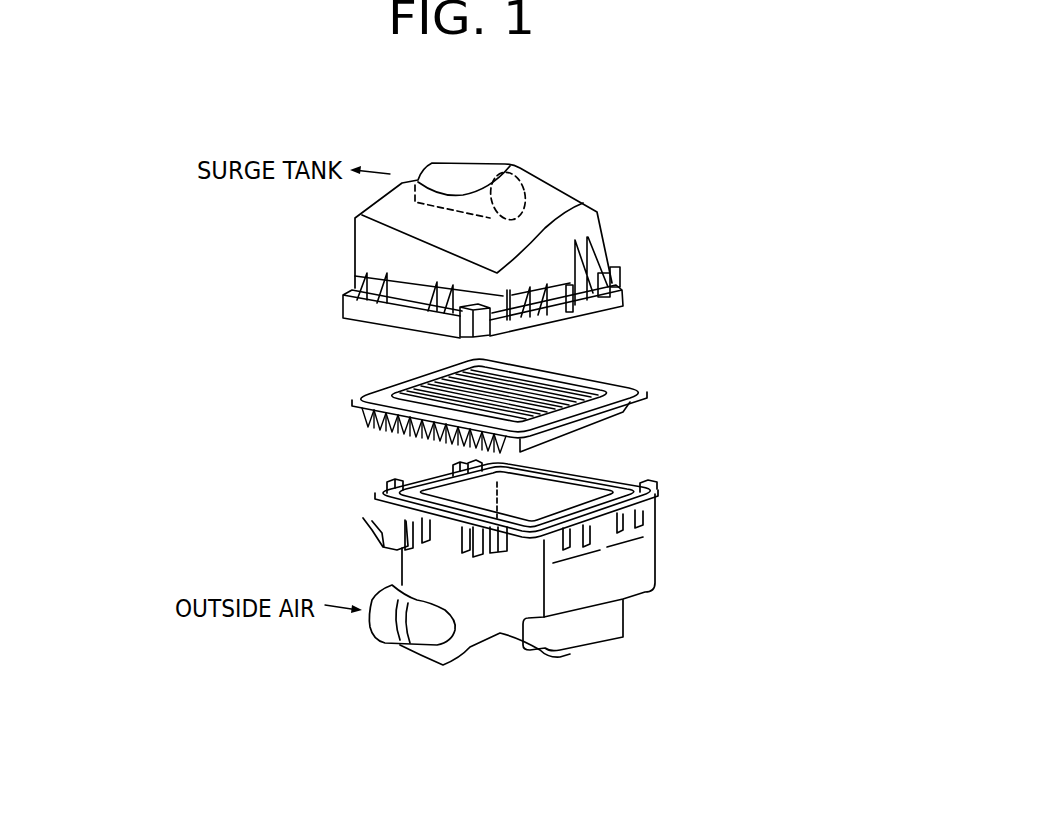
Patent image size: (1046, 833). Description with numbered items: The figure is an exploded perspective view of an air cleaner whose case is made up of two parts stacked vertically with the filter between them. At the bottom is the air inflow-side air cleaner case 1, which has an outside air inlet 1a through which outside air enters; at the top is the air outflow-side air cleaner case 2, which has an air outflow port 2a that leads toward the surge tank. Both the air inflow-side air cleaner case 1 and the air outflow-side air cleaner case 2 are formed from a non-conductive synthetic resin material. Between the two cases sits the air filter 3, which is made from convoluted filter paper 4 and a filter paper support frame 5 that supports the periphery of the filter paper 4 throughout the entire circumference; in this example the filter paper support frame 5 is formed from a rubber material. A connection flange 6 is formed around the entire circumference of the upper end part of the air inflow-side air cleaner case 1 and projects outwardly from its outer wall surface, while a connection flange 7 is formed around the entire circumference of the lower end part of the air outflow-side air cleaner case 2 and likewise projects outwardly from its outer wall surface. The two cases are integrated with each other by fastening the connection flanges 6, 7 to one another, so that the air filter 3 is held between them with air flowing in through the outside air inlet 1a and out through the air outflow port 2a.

The air inflow-side air cleaner case 1 is at (637, 566).
The outside air inlet 1a is at (372, 632).
The air outflow-side air cleaner case 2 is at (590, 223).
The air outflow port 2a is at (415, 180).
The air filter 3 is at (650, 377).
The convoluted filter paper 4 is at (427, 388).
The filter paper support frame 5 is at (598, 407).
The connection flange 6 is at (660, 488).
The connection flange 7 is at (613, 307).